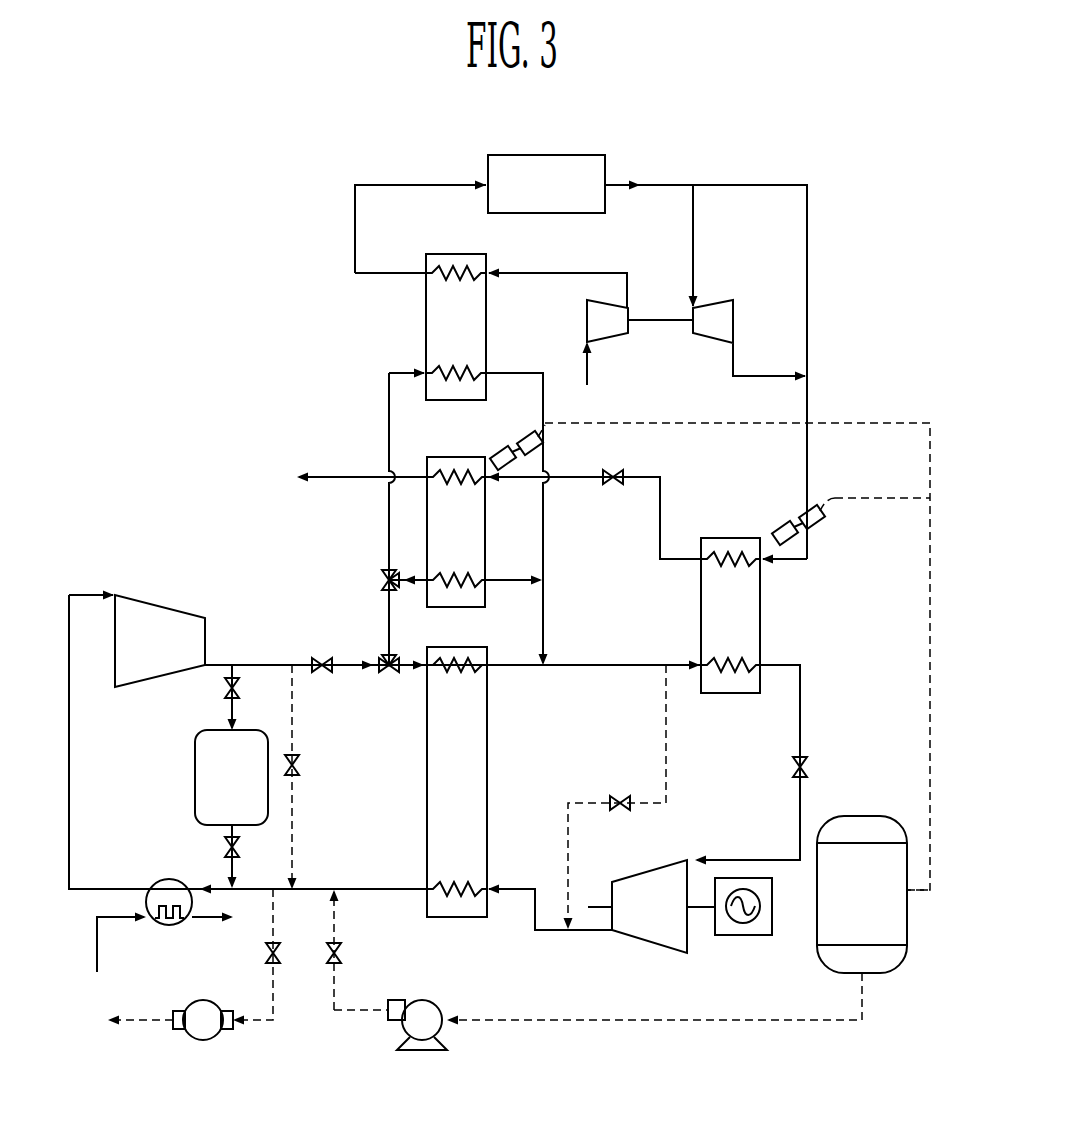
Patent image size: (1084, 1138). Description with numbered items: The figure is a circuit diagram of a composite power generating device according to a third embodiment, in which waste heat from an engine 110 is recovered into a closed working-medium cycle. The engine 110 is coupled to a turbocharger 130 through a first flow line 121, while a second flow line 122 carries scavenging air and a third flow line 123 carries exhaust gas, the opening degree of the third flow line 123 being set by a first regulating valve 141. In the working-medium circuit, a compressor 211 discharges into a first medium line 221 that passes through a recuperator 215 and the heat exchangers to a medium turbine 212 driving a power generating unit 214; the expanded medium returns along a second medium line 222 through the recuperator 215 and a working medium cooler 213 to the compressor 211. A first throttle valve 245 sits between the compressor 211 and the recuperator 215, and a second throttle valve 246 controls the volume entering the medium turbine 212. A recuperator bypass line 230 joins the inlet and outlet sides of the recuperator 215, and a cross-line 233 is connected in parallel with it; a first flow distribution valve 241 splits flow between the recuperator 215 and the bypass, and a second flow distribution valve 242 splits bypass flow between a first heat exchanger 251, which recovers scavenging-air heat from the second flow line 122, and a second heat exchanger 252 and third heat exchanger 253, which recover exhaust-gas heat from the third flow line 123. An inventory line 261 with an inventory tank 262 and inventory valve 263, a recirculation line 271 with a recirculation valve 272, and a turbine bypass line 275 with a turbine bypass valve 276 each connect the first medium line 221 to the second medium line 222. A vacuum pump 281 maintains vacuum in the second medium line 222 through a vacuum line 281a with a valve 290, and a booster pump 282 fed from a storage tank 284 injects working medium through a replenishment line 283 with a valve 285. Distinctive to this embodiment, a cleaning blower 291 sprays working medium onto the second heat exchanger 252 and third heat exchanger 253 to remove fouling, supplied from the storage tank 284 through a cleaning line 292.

The engine 110 is at (563, 165).
The first flow line 121 is at (687, 182).
The second flow line 122 is at (577, 272).
The third flow line 123 is at (352, 475).
The turbocharger 130 is at (608, 325).
The first regulating valve 141 is at (620, 475).
The compressor 211 is at (165, 620).
The medium turbine 212 is at (663, 935).
The working medium cooler 213 is at (178, 925).
The power generating unit 214 is at (733, 925).
The recuperator 215 is at (487, 780).
The first medium line 221 is at (260, 660).
The second medium line 222 is at (72, 847).
The recuperator bypass line 230 is at (389, 403).
The cross-line 233 is at (508, 578).
The first flow distribution valve 241 is at (385, 660).
The second flow distribution valve 242 is at (385, 578).
The first throttle valve 245 is at (318, 670).
The second throttle valve 246 is at (808, 770).
The first heat exchanger 251 is at (426, 318).
The second heat exchanger 252 is at (427, 522).
The third heat exchanger 253 is at (760, 615).
The inventory line 261 is at (228, 860).
The inventory tank 262 is at (195, 770).
The inventory valve 263 is at (225, 683).
The recirculation line 271 is at (292, 848).
The recirculation valve 272 is at (300, 768).
The turbine bypass line 275 is at (667, 735).
The turbine bypass valve 276 is at (625, 797).
The vacuum pump 281 is at (200, 1030).
The vacuum line 281a is at (272, 1020).
The booster pump 282 is at (425, 1025).
The replenishment line 283 is at (368, 1012).
The storage tank 284 is at (838, 930).
The valve 285 is at (345, 960).
The valve 290 is at (277, 965).
The cleaning blower 291 is at (530, 435).
The cleaning line 292 is at (928, 618).